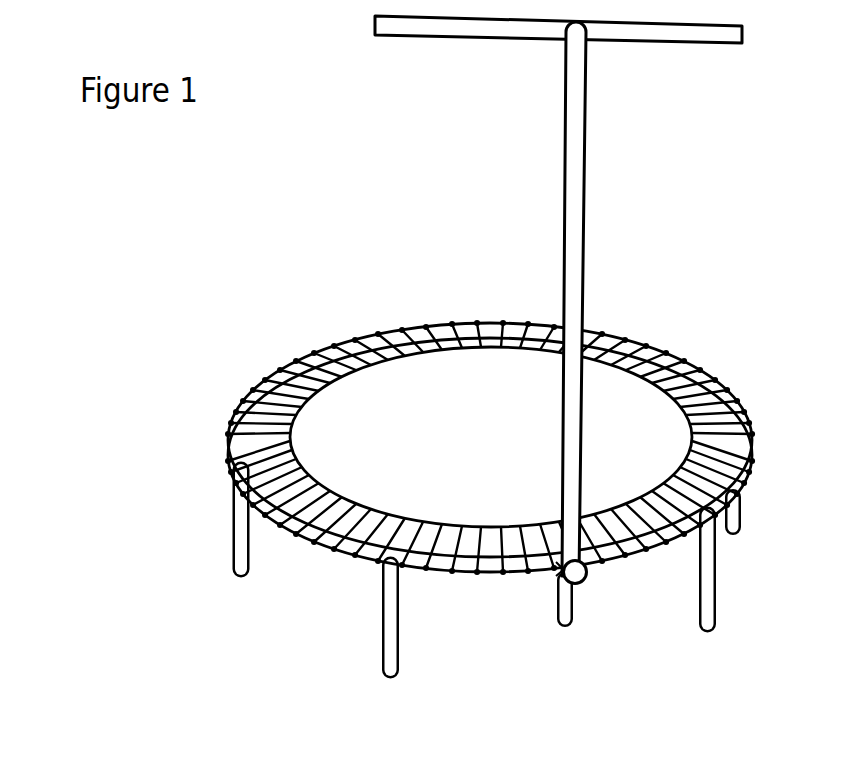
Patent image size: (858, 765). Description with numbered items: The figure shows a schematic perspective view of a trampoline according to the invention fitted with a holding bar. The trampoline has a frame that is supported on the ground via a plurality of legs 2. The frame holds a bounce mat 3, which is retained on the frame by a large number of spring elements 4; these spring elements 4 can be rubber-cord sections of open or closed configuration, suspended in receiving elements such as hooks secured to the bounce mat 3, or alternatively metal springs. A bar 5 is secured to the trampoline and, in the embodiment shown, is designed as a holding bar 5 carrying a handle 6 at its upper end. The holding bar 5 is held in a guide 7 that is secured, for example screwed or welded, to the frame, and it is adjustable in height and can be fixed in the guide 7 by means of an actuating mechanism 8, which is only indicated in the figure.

The legs 2 is at (238, 547).
The bounce mat 3 is at (453, 434).
The spring elements 4 is at (310, 352).
The holding bar 5 is at (612, 210).
The handle 6 is at (662, 30).
The guide 7 is at (555, 578).
The actuating mechanism 8 is at (588, 582).